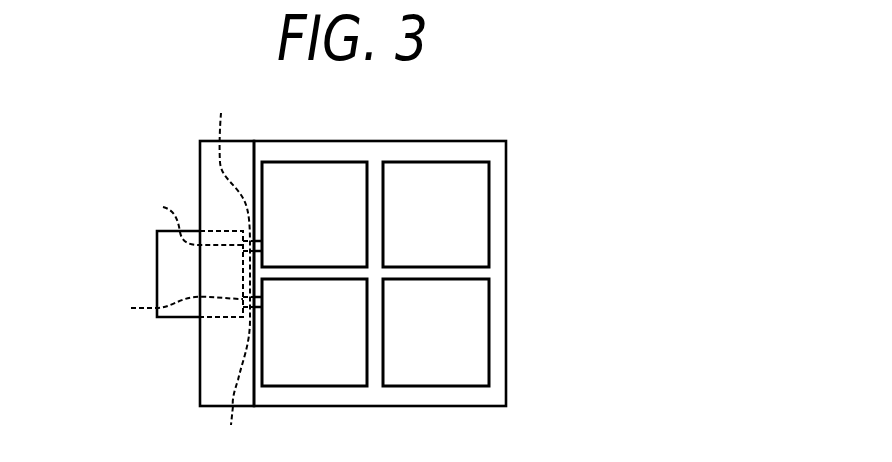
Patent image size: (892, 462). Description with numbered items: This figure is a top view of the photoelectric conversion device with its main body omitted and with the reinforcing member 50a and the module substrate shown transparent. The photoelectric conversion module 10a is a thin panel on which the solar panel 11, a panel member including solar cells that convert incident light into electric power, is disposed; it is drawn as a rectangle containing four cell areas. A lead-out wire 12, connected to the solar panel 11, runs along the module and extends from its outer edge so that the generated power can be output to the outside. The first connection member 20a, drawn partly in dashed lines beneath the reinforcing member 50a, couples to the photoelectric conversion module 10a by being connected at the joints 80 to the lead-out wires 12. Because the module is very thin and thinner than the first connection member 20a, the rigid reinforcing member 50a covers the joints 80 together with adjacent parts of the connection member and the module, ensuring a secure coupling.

The photoelectric conversion module 10a is at (506, 171).
The solar panel 11 is at (467, 223).
The lead-out wire 12 is at (231, 274).
The first connection member 20a is at (163, 272).
The reinforcing member 50a is at (213, 357).
The joint 80 is at (184, 256).